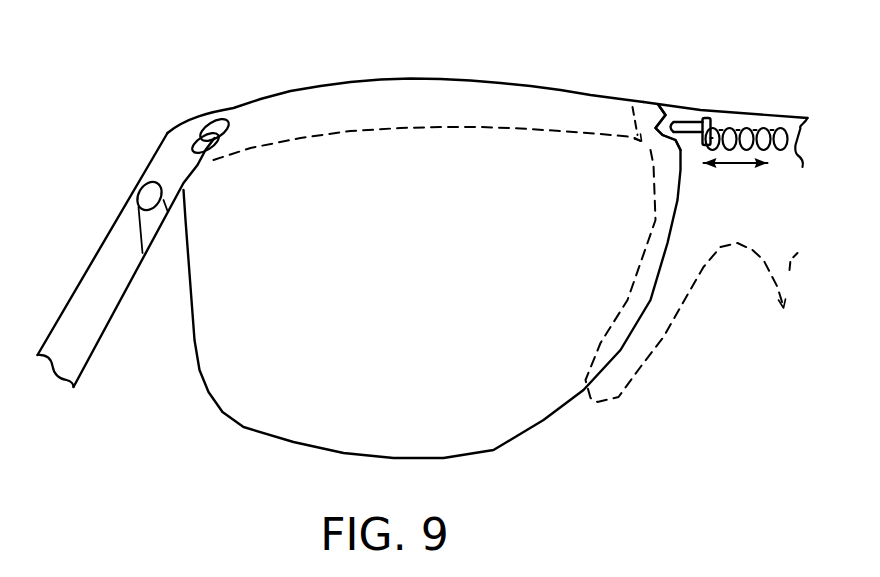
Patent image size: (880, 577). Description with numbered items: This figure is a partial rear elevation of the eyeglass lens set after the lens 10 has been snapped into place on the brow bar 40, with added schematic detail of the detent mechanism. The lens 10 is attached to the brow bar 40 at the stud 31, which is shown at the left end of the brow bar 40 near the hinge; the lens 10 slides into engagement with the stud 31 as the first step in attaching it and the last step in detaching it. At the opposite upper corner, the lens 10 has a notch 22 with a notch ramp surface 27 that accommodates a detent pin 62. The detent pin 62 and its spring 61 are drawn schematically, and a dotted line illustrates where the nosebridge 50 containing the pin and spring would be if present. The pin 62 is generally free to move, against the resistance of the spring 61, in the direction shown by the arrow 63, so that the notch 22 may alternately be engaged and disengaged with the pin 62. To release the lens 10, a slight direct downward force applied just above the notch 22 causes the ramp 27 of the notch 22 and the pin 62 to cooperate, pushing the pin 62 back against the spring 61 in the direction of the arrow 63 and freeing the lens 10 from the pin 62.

The lens 10 is at (293, 443).
The brow bar 40 is at (543, 87).
The stud 31 is at (238, 108).
The notch ramp surface 27 is at (643, 102).
The notch 22 is at (647, 148).
The detent pin 62 is at (688, 124).
The spring 61 is at (740, 135).
The arrow 63 is at (725, 166).
The nosebridge 50 is at (672, 318).